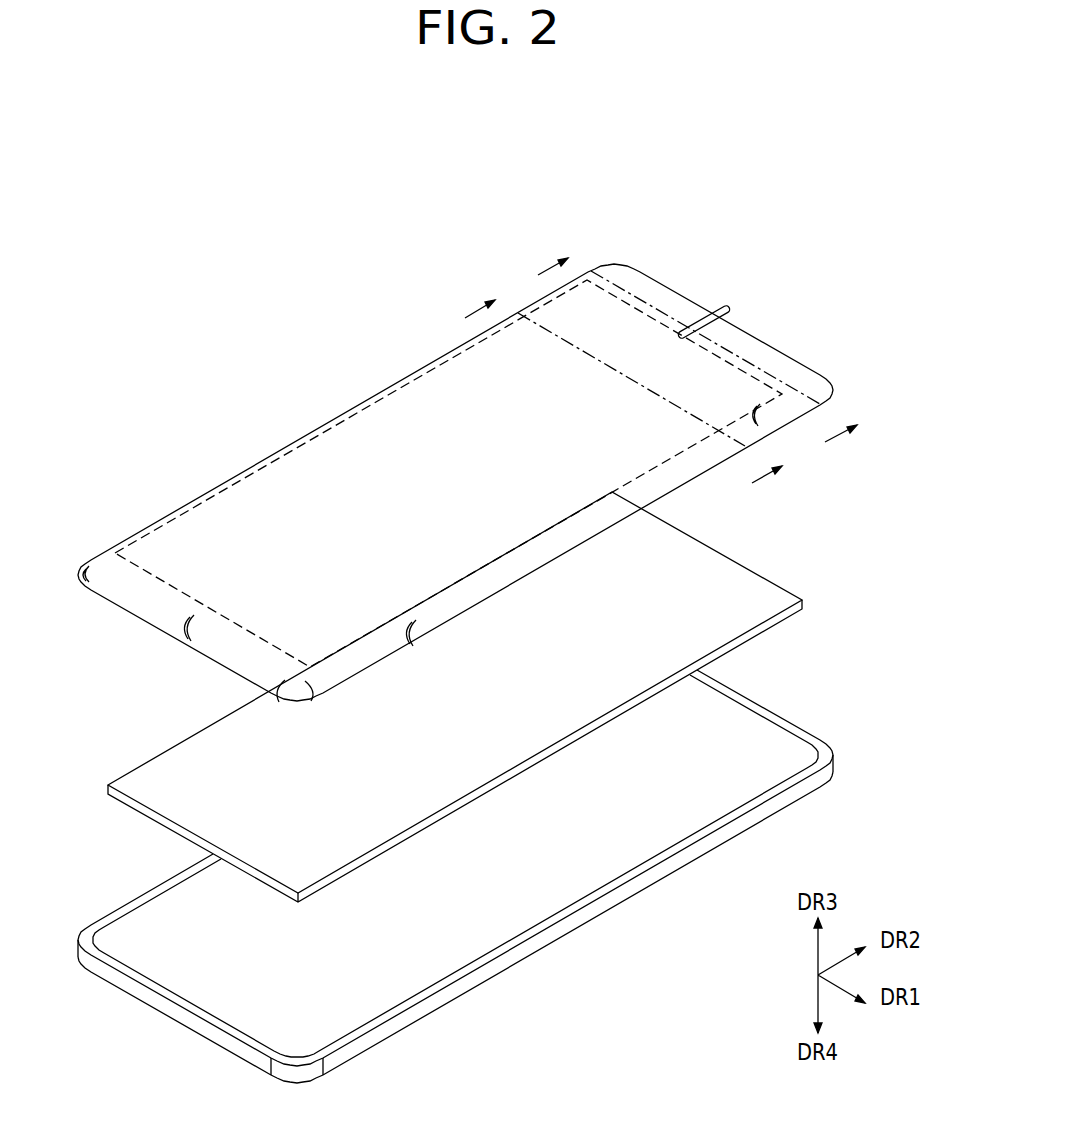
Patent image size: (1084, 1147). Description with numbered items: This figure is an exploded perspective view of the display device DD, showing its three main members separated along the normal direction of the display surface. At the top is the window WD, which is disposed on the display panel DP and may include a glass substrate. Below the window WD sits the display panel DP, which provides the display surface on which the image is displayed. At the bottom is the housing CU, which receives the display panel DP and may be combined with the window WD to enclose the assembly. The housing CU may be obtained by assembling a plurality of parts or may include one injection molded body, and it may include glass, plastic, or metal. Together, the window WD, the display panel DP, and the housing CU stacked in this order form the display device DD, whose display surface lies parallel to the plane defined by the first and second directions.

The display device DD is at (795, 226).
The window WD is at (834, 387).
The display panel DP is at (783, 603).
The housing CU is at (836, 773).